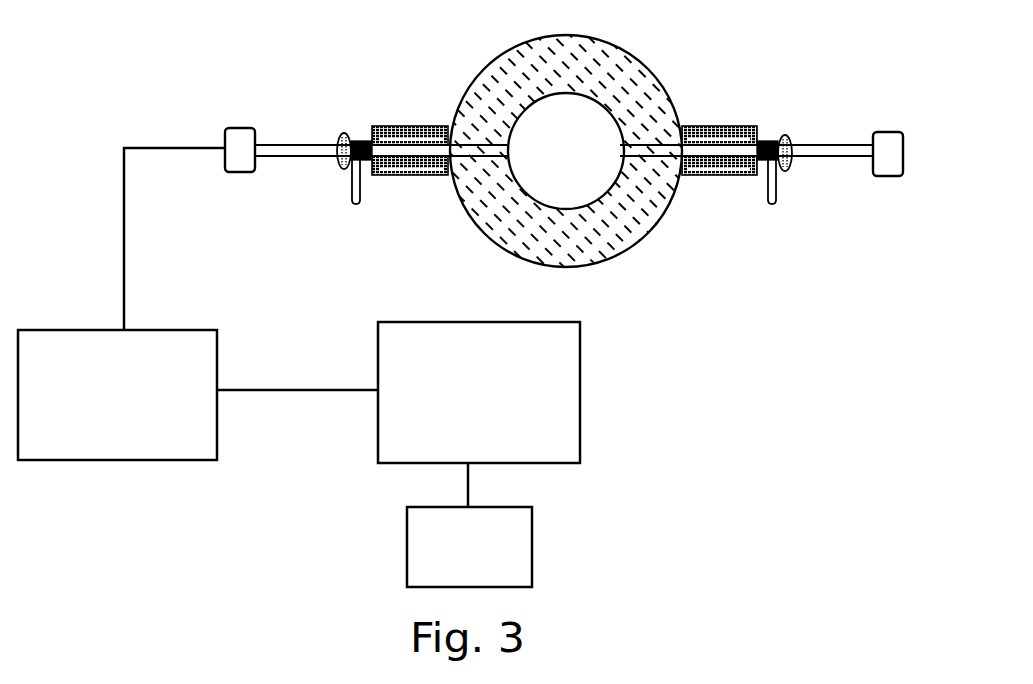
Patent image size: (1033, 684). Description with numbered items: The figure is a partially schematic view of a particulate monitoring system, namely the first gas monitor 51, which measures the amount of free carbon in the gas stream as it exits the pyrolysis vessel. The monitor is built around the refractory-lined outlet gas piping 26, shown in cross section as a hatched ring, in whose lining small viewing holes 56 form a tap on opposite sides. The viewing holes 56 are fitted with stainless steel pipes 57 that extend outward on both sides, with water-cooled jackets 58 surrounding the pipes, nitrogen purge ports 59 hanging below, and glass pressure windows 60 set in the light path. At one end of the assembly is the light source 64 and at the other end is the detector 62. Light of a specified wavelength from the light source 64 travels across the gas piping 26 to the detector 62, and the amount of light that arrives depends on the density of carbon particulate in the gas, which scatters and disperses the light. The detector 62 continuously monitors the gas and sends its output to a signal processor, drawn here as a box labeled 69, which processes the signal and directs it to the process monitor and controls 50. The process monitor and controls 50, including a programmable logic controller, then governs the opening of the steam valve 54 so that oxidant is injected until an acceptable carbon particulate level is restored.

The outlet gas piping 26 is at (634, 58).
The process monitor and controls 50 is at (580, 402).
The first gas monitor 51 is at (316, 118).
The steam valve 54 is at (532, 540).
The viewing holes 56 is at (658, 137).
The stainless steel pipes 57 is at (278, 143).
The water-cooled jackets 58 is at (430, 128).
The nitrogen purge ports 59 is at (352, 206).
The glass pressure windows 60 is at (347, 168).
The detector 62 is at (225, 135).
The light source 64 is at (903, 130).
The signal processor 69 is at (72, 330).